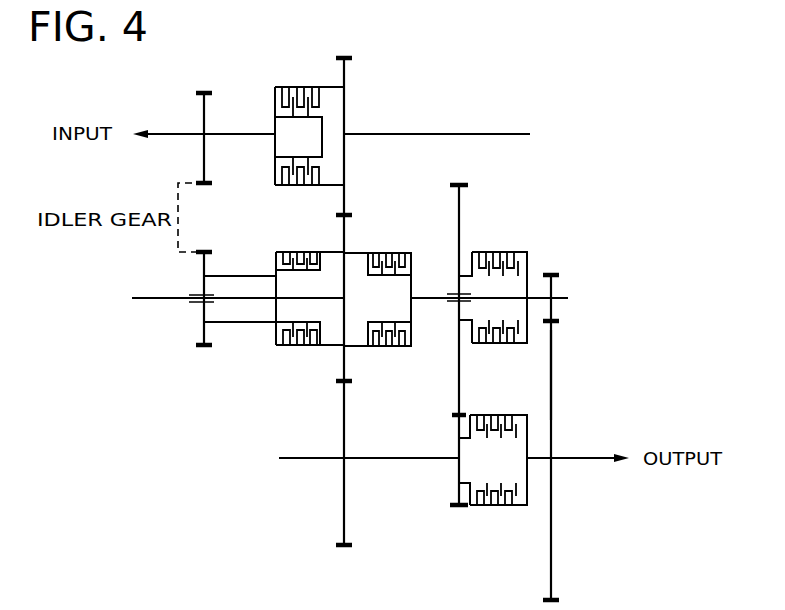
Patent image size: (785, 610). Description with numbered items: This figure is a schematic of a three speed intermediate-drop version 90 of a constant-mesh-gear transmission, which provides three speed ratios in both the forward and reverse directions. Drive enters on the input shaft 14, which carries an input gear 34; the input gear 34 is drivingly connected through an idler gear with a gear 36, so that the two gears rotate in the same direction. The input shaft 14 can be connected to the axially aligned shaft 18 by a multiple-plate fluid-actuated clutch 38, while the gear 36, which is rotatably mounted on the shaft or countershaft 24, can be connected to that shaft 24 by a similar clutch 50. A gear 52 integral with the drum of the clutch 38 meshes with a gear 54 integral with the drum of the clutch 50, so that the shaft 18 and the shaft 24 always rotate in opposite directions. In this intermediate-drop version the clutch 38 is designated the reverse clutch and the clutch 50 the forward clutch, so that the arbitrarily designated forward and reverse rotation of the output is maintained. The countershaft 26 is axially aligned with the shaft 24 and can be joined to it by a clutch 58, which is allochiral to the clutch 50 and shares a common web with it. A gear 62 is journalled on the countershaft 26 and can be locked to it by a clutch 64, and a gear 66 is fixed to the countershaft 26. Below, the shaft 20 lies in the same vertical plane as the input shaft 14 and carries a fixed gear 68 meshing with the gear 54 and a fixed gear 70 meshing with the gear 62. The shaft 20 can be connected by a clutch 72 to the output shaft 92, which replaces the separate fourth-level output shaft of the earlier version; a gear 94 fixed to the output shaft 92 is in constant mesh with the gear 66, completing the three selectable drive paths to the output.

The input shaft 14 is at (240, 137).
The shaft 18 is at (440, 133).
The shaft 20 is at (392, 461).
The shaft or countershaft 24 is at (243, 301).
The shaft or countershaft 26 is at (430, 301).
The input gear 34 is at (203, 105).
The gear 36 is at (201, 258).
The clutch 38 is at (296, 84).
The clutch 50 is at (291, 248).
The gear 52 is at (346, 74).
The gear 54 is at (346, 226).
The clutch 58 is at (390, 246).
The gear 62 is at (461, 200).
The clutch 64 is at (499, 246).
The gear 66 is at (553, 289).
The gear 68 is at (342, 398).
The gear 70 is at (457, 425).
The clutch 72 is at (490, 407).
The three speed intermediate-drop version 90 is at (238, 396).
The output shaft 92 is at (580, 462).
The gear 94 is at (553, 360).